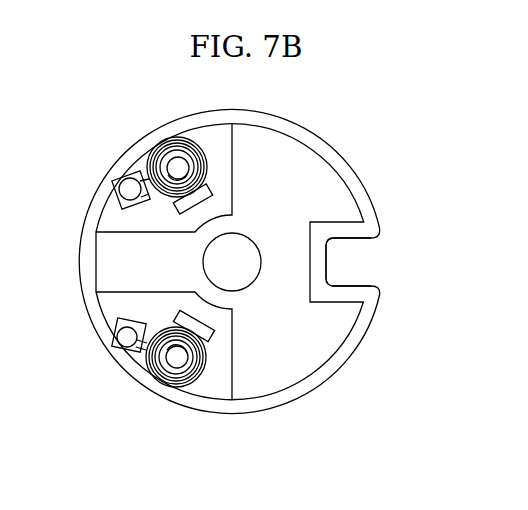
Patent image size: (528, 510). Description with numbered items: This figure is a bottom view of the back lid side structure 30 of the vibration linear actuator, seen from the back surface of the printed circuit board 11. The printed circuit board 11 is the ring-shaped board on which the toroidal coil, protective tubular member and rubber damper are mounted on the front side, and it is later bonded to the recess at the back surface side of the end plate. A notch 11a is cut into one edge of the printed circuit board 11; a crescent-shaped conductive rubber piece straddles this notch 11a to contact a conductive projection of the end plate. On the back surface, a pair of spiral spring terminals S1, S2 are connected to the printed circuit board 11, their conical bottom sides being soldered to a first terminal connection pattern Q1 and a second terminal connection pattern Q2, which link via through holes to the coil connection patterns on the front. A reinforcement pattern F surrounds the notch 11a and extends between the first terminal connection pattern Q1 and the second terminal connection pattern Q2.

The back lid side structure 30 is at (89, 76).
The printed circuit board 11 is at (308, 393).
The notch 11a is at (360, 286).
The reinforcement pattern F is at (328, 192).
The spiral spring terminal S1 is at (177, 137).
The spiral spring terminal S2 is at (176, 387).
The first terminal connection pattern Q1 is at (206, 188).
The second terminal connection pattern Q2 is at (207, 350).